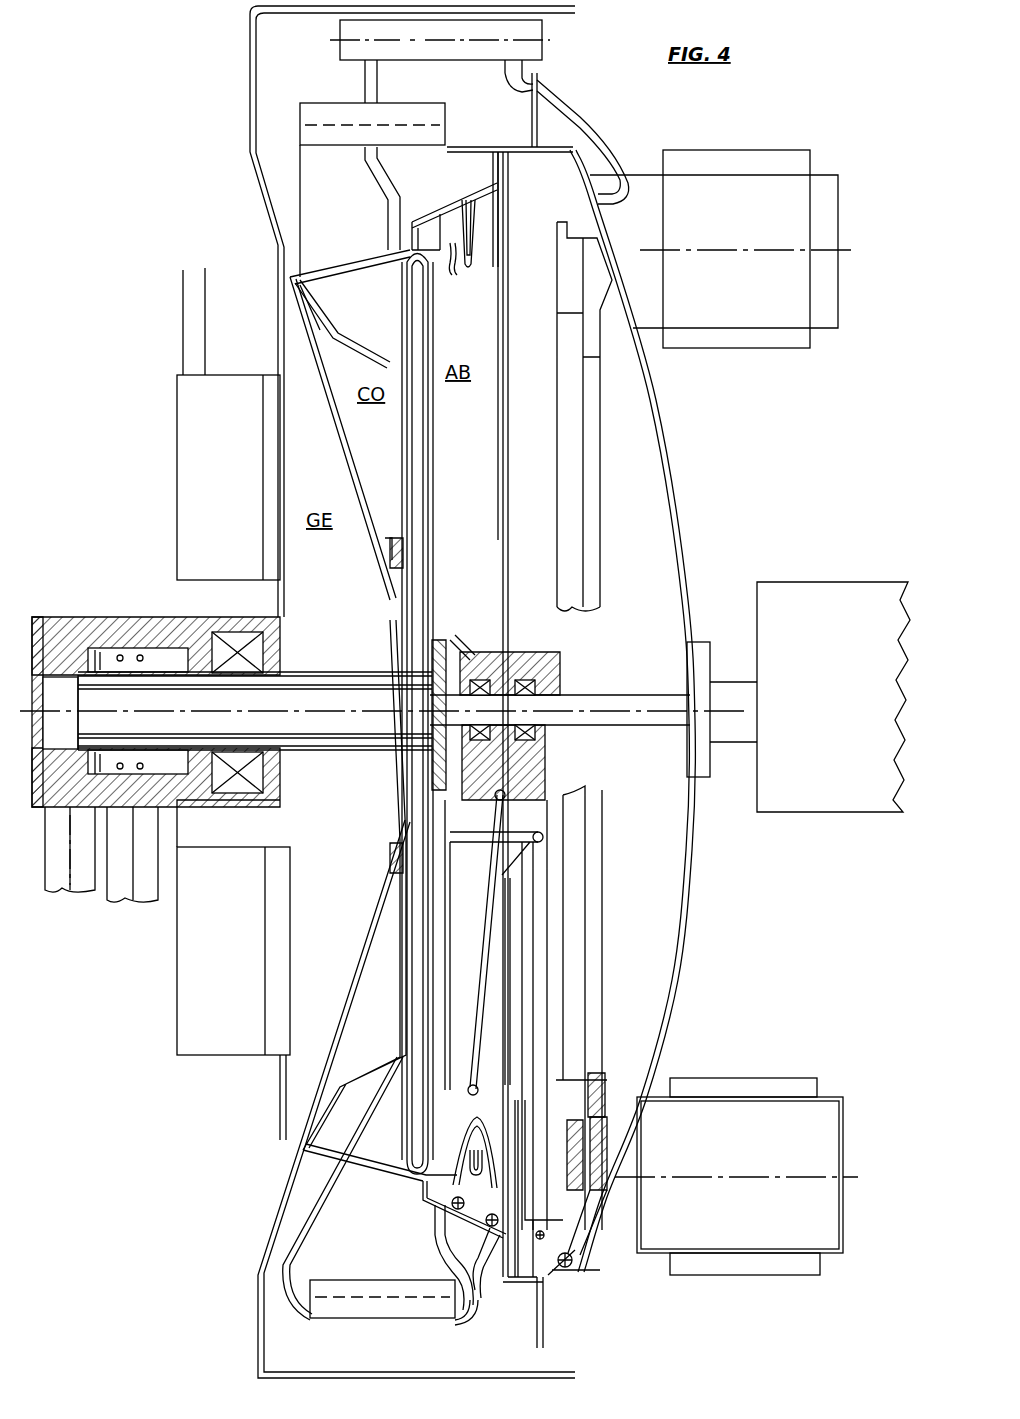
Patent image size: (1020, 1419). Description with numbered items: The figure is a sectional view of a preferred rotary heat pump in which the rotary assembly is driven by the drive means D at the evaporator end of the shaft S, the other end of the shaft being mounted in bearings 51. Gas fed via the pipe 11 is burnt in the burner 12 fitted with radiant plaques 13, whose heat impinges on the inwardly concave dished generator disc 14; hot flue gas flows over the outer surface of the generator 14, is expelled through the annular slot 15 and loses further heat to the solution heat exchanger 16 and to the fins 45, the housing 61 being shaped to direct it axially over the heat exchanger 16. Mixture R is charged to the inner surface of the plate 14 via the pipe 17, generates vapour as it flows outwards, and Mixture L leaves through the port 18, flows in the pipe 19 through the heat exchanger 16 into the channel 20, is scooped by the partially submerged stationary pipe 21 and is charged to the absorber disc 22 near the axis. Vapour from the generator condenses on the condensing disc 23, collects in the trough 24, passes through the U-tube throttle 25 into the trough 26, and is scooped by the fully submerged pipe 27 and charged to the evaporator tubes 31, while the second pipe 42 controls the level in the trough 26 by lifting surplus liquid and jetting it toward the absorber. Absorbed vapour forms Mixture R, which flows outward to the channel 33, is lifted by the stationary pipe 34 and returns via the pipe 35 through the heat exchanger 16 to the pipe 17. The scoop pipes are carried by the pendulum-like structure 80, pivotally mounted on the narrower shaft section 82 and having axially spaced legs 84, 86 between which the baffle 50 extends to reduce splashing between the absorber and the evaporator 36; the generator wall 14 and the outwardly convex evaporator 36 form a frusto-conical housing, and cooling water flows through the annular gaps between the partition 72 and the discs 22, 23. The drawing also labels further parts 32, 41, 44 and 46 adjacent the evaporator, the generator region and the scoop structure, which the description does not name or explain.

The pipe 11 is at (203, 270).
The burner 12 is at (233, 715).
The radiant plaques 13 is at (283, 476).
The dished generator disc 14 is at (380, 548).
The annular slot 15 is at (288, 300).
The solution heat exchanger 16 is at (445, 115).
The pipe 17 is at (403, 992).
The port 18 is at (304, 1142).
The pipe 19 is at (300, 1184).
The channel 20 is at (486, 242).
The stationary pipe 21 is at (460, 1228).
The absorber disc 22 is at (430, 430).
The condensing disc 23 is at (403, 430).
The trough 24 is at (340, 307).
The U-tube throttle 25 is at (540, 42).
The trough 26 is at (510, 714).
The scoop pipe 27 is at (588, 1265).
The tubes 31 is at (843, 328).
The motor housing 32 is at (800, 348).
The channel 33 is at (455, 258).
The stationary pipe 34 is at (450, 1188).
The pipe 35 is at (440, 806).
The evaporator 36 is at (688, 905).
The nozzle 41 is at (466, 271).
The partially submerged pipe 42 is at (540, 1238).
The support strut 44 is at (407, 103).
The fins 45 is at (545, 82).
The hatched block 46 is at (600, 1096).
The baffle 50 is at (500, 398).
The bearings 51 is at (120, 650).
The housing 61 is at (248, 108).
The partition 72 is at (430, 548).
The structure 80 is at (545, 780).
The narrower section of the shaft 82 is at (578, 690).
The leg 84 is at (492, 1053).
The leg 86 is at (548, 970).
The drive means D is at (825, 582).
The shaft S is at (733, 680).